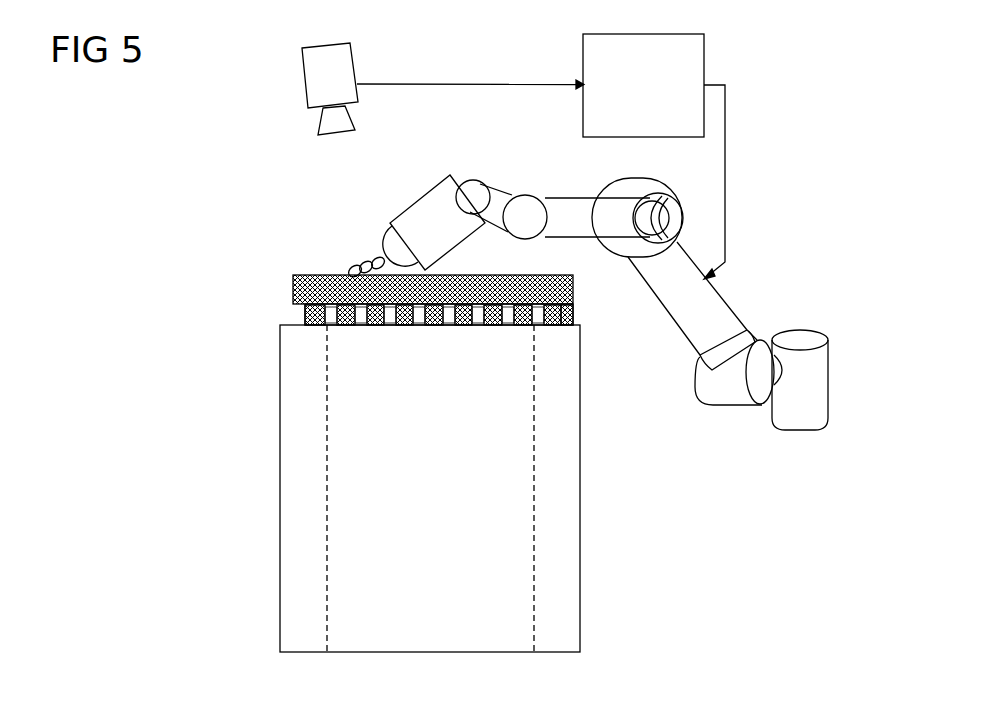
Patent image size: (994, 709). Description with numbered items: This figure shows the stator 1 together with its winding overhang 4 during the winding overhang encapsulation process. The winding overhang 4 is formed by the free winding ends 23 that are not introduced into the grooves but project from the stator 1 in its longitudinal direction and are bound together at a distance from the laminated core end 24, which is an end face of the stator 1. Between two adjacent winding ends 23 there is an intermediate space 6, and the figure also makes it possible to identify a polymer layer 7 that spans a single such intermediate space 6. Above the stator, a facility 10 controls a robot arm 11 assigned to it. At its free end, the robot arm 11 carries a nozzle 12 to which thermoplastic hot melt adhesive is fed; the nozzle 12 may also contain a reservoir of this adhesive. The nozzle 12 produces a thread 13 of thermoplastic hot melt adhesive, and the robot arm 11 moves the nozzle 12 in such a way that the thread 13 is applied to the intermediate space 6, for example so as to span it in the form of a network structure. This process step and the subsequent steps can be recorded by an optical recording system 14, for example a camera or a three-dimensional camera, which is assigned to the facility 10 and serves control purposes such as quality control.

The stator 1 is at (565, 572).
The winding overhang 4 is at (293, 285).
The intermediate space 6 is at (472, 327).
The polymer layer 7 is at (305, 306).
The facility 10 is at (704, 51).
The robot arm 11 is at (800, 420).
The nozzle 12 is at (415, 197).
The thread 13 is at (349, 256).
The optical recording system 14 is at (303, 82).
The winding ends 23 is at (373, 328).
The laminated core end 24 is at (568, 322).